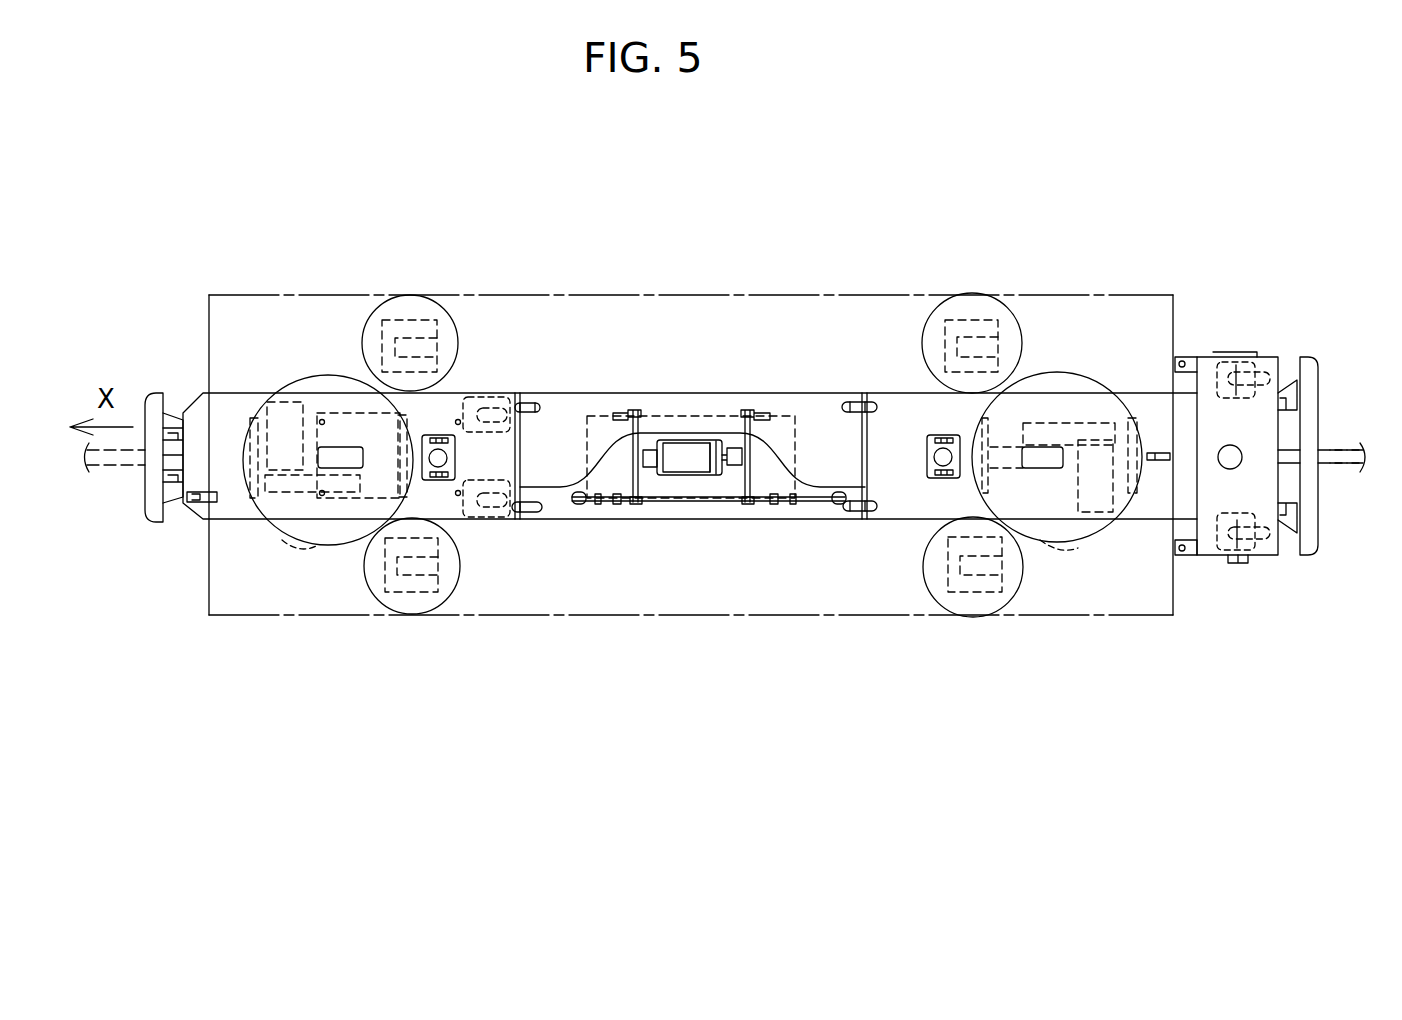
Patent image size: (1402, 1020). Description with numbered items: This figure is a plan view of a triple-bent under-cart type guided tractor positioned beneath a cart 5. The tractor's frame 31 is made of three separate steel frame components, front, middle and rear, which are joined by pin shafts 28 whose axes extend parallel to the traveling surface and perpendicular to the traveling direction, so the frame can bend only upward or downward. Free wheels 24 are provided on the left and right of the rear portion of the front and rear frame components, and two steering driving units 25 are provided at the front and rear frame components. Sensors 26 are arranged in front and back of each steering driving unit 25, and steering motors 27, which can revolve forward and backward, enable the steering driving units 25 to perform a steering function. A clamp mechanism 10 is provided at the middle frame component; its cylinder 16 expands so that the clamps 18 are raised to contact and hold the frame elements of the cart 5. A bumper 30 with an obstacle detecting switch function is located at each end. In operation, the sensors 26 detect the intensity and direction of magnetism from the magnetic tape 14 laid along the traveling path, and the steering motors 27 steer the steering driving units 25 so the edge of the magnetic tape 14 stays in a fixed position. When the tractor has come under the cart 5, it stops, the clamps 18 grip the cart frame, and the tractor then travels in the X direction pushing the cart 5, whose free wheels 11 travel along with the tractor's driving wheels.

The cart 5 is at (635, 295).
The clamp mechanism 10 is at (660, 524).
The free wheels 11 is at (413, 322).
The magnetic tape 14 is at (1340, 447).
The cylinder 16 is at (688, 455).
The clamps 18 is at (540, 508).
The free wheels 24 is at (481, 406).
The steering driving units 25 is at (310, 533).
The sensors 26 is at (348, 385).
The steering motors 27 is at (447, 480).
The pin shafts 28 is at (862, 405).
The bumper 30 is at (157, 500).
The frame 31 is at (718, 558).